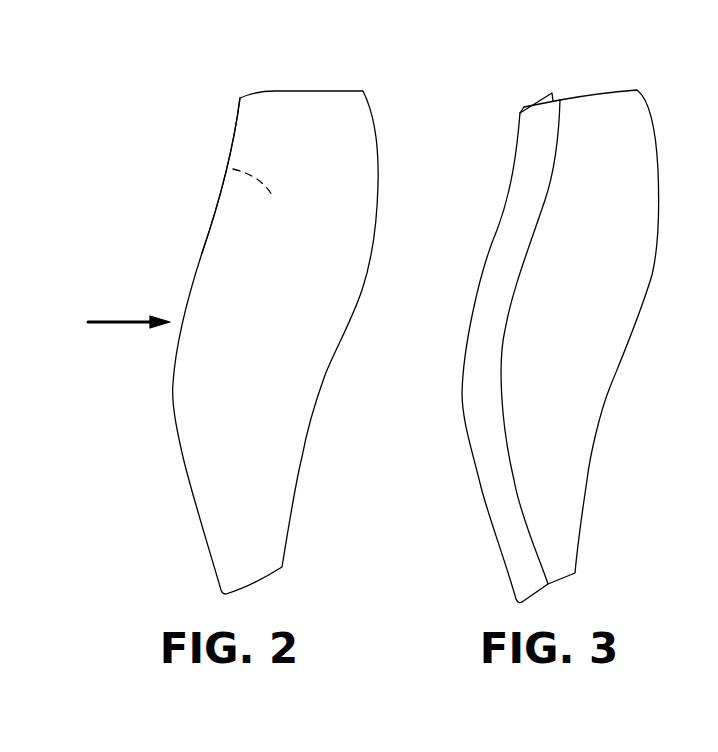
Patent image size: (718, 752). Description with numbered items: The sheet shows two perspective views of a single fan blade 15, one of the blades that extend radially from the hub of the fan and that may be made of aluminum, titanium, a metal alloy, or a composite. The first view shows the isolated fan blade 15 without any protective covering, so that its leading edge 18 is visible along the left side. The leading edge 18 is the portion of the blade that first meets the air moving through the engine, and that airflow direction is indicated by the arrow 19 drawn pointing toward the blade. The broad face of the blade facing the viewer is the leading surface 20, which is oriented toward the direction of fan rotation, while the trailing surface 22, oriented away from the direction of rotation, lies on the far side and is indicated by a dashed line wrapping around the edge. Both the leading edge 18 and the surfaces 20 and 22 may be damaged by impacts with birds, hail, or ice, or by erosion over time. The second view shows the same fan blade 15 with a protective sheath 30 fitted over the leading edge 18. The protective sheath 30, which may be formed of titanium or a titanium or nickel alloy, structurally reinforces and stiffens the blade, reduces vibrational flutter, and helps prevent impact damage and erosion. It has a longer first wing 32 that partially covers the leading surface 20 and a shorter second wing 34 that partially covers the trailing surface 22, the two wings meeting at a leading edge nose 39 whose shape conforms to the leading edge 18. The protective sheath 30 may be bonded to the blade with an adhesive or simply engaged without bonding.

In FIG. 2, the fan blade 15 is at (312, 342).
In FIG. 3, the fan blade 15 is at (553, 322).
In FIG. 2, the leading edge 18 is at (200, 255).
In FIG. 2, the arrow 19 is at (128, 323).
In FIG. 2, the leading surface 20 is at (264, 314).
In FIG. 2, the trailing surface 22 is at (230, 170).
In FIG. 3, the protective sheath 30 is at (487, 458).
In FIG. 3, the first wing 32 is at (476, 351).
In FIG. 3, the second wing 34 is at (539, 94).
In FIG. 3, the leading edge nose 39 is at (522, 114).